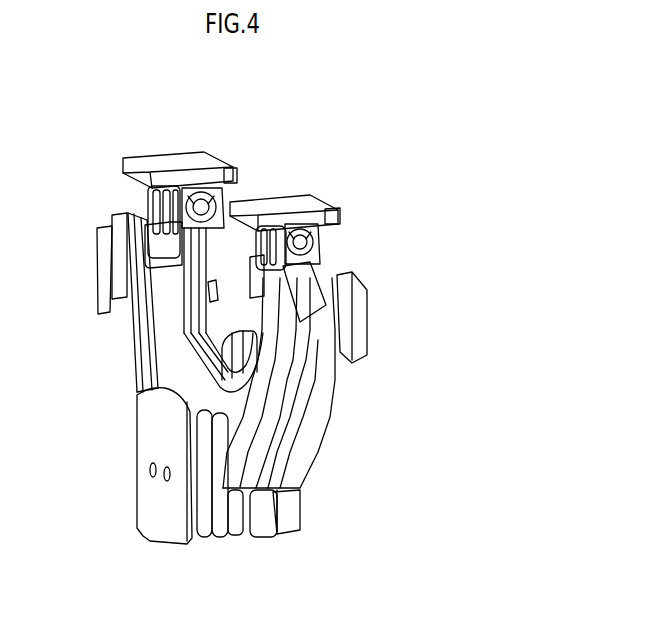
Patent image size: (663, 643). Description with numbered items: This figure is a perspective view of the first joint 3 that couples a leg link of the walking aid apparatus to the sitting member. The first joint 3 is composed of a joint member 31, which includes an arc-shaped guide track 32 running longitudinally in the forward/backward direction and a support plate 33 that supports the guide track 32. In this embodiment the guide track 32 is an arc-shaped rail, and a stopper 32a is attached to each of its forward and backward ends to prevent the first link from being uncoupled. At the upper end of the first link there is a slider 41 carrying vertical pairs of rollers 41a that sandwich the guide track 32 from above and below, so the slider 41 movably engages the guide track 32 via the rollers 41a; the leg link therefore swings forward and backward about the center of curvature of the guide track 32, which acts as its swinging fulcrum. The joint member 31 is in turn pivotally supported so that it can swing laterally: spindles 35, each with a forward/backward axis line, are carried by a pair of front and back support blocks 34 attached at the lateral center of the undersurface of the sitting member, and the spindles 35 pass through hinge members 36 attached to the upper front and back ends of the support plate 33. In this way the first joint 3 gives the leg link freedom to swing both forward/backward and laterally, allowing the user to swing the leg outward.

The first joint 3 is at (105, 392).
The joint member 31 is at (66, 336).
The guide track 32 is at (138, 365).
The stopper 32a is at (103, 273).
The support plate 33 is at (173, 318).
The support block 34 is at (307, 197).
The spindle 35 is at (200, 203).
The hinge member 36 is at (145, 215).
The slider 41 is at (143, 470).
The roller 41a is at (217, 537).